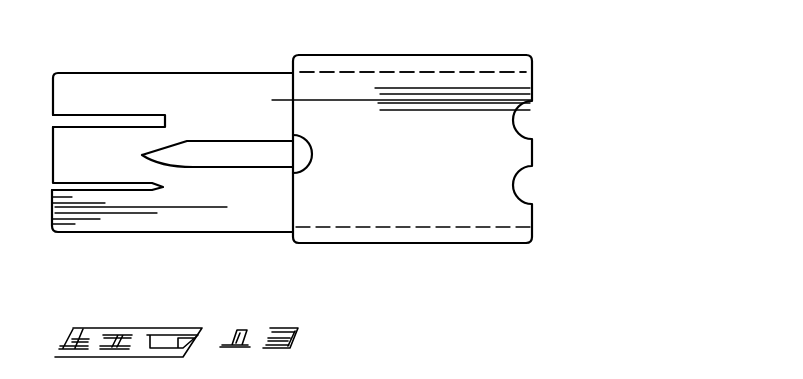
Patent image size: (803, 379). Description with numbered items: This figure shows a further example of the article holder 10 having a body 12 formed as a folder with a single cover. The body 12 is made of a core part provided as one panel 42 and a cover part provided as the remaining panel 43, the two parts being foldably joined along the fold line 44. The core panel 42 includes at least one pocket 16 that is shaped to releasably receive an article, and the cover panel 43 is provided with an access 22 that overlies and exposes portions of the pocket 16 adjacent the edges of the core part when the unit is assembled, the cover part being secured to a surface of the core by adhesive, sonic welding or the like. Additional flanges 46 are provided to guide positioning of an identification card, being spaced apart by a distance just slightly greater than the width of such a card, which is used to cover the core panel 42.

The article holder 10 is at (560, 70).
The body 12 is at (200, 70).
The pocket 16 is at (100, 181).
The access 22 is at (512, 172).
The core panel 42 is at (185, 233).
The remaining panel 43 is at (413, 210).
The fold line 44 is at (294, 200).
The flanges 46 is at (403, 54).